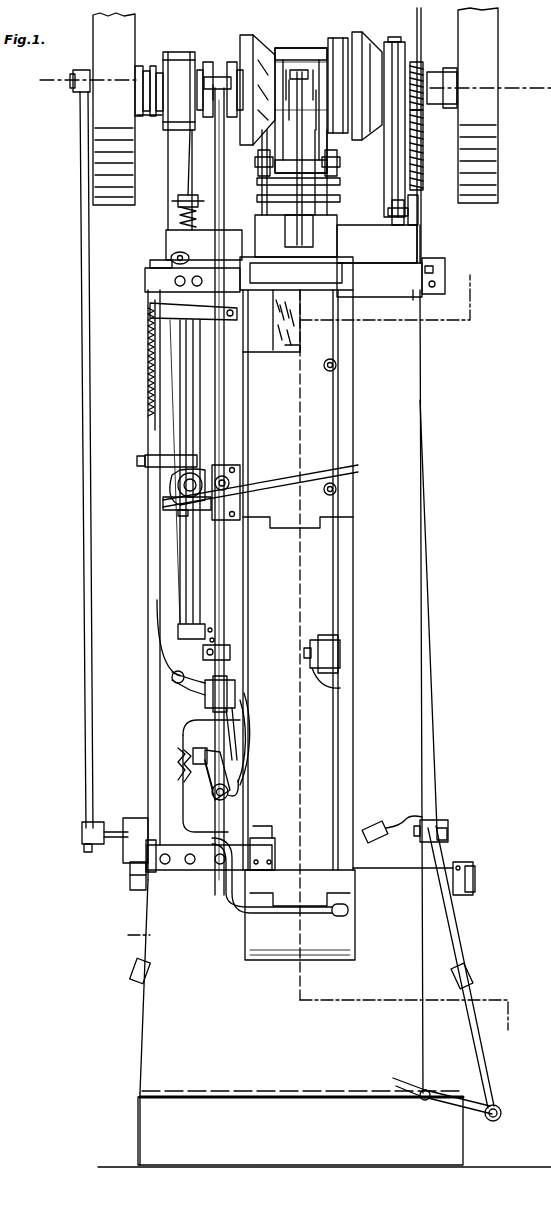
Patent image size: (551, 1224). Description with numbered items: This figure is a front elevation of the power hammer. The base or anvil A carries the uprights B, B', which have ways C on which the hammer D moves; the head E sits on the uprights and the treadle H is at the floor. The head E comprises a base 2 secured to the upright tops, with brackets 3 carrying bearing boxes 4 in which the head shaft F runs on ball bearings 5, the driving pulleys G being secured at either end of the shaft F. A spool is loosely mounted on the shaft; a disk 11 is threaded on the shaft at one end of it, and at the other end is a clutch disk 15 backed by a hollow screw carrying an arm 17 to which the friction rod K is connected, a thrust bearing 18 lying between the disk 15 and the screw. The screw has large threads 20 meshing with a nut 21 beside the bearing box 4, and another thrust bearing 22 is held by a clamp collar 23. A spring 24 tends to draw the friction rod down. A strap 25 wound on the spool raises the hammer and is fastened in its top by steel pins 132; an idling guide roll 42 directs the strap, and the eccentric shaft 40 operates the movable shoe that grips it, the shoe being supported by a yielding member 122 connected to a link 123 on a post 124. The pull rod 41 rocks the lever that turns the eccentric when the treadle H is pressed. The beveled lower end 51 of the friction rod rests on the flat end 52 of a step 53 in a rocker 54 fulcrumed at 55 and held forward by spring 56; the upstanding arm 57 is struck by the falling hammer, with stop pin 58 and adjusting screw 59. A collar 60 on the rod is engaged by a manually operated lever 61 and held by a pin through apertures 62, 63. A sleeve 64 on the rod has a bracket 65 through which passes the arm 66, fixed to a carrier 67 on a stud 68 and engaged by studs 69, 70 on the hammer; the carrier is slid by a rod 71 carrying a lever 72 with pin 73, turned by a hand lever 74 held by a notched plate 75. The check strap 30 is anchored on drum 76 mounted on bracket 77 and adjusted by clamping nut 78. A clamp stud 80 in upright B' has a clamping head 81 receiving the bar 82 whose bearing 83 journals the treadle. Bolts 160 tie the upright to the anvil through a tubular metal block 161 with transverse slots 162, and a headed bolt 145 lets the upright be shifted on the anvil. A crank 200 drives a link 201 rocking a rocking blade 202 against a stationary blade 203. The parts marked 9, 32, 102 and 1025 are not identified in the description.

The driving pulleys G is at (100, 150).
The shaft 9 is at (81, 81).
The crank 200 is at (57, 90).
The link 201 is at (82, 329).
The rocking blade 202 is at (104, 846).
The headed bolt 145 is at (133, 880).
The thrust bearing 22 is at (148, 66).
The clamp collar 23 is at (140, 112).
The bearing boxes 4 is at (180, 58).
The brackets 3 is at (168, 180).
The base 2 is at (166, 238).
The arm 17 is at (190, 185).
The thrust bearing 18 is at (228, 72).
The nut 21 is at (205, 90).
The friction rod K is at (226, 551).
The clutch disk 15 is at (245, 50).
The drum 1025 is at (292, 48).
The drum 102 is at (290, 48).
The ball bearings 5 is at (294, 48).
The link 123 is at (295, 157).
The yielding member 122 is at (265, 176).
The idling guide roll 42 is at (338, 160).
The post 124 is at (340, 190).
The eccentric shaft 40 is at (365, 215).
The bracket 32 is at (428, 200).
The large threads 20 is at (423, 72).
The strap 25 is at (422, 14).
The head shaft F is at (511, 78).
The check strap 30 is at (338, 38).
The disk 11 is at (365, 35).
The head E is at (445, 246).
The base or anvil A is at (305, 678).
The hammer D is at (345, 505).
The ways C is at (345, 597).
The steel pins 132 is at (315, 353).
The stud 69 is at (337, 365).
The stud 70 is at (337, 489).
The arm 66 is at (310, 474).
The bracket 77 is at (341, 645).
The drum 76 is at (340, 688).
The clamping nut 78 is at (308, 662).
The upright B is at (181, 585).
The upright B' is at (447, 615).
The pull rod 41 is at (428, 628).
The spring 24 is at (146, 395).
The pin 73 is at (196, 455).
The lever 72 is at (145, 456).
The stud 68 is at (178, 480).
The carrier 67 is at (163, 500).
The bracket 65 is at (229, 487).
The sleeve 64 is at (240, 505).
The rod 71 is at (156, 618).
The manually operated lever 61 is at (188, 659).
The aperture 62 is at (212, 630).
The aperture 63 is at (214, 640).
The collar 60 is at (232, 652).
The beveled lower end 51 is at (210, 720).
The upstanding arm 57 is at (240, 735).
The adjusting screw 59 is at (247, 752).
The stop pin 58 is at (243, 752).
The step 53 is at (240, 766).
The flat end 52 is at (229, 792).
The fulcrum 55 is at (235, 800).
The spring 56 is at (195, 770).
The rocker 54 is at (208, 780).
The notched plate 75 is at (205, 865).
The stationary blade 203 is at (275, 855).
The hand lever 74 is at (340, 914).
The transverse slots 162 is at (140, 963).
The bolts 160 is at (378, 826).
The clamp stud 80 is at (448, 816).
The clamping head 81 is at (448, 836).
The bar 82 is at (473, 873).
The bearing 83 is at (492, 1106).
The tubular metal block 161 is at (470, 975).
The treadle H is at (423, 1098).